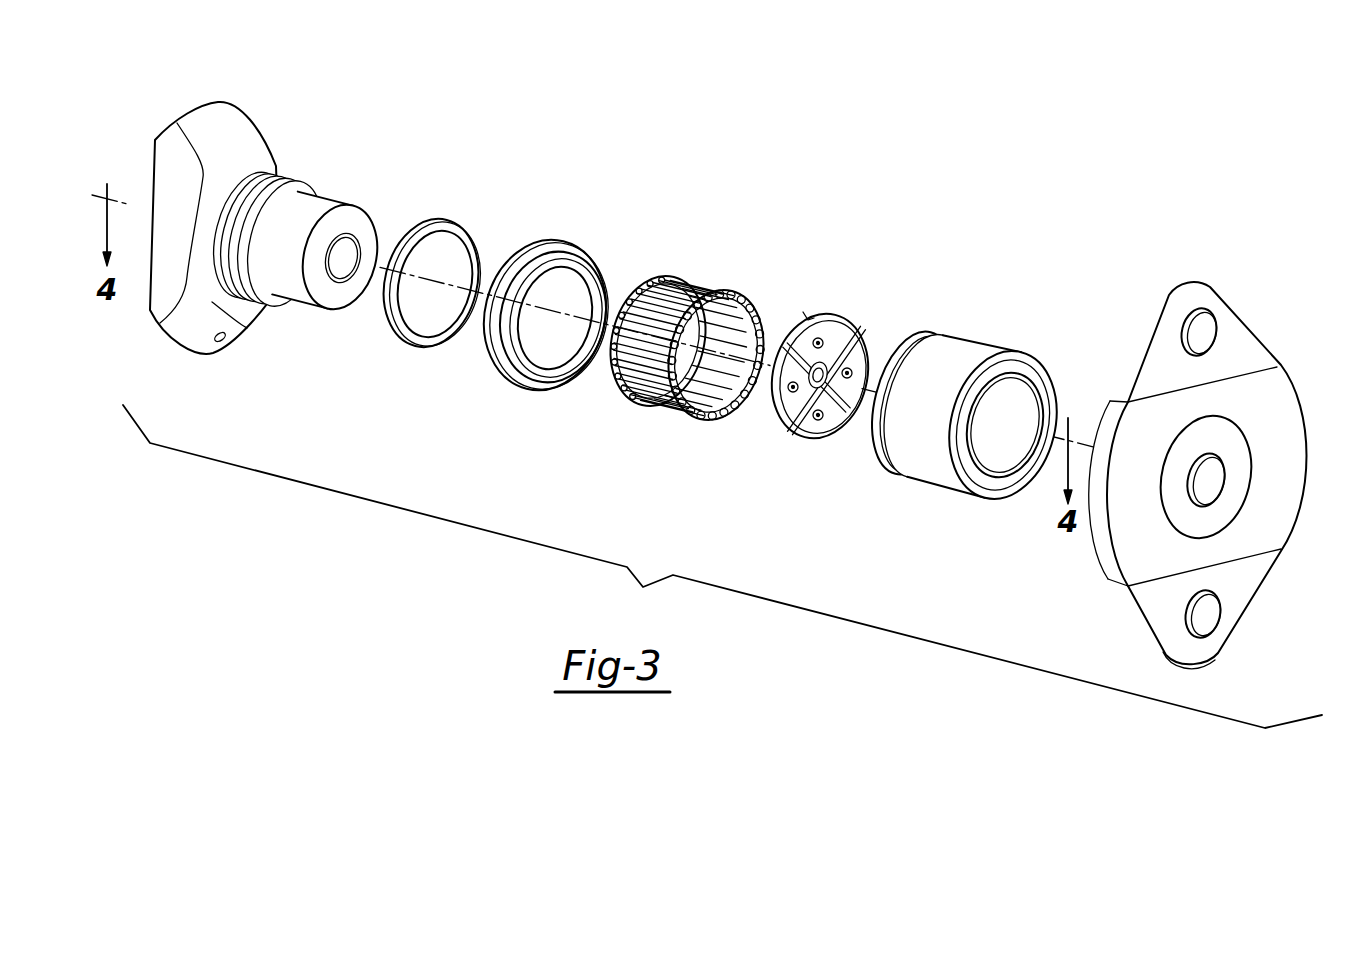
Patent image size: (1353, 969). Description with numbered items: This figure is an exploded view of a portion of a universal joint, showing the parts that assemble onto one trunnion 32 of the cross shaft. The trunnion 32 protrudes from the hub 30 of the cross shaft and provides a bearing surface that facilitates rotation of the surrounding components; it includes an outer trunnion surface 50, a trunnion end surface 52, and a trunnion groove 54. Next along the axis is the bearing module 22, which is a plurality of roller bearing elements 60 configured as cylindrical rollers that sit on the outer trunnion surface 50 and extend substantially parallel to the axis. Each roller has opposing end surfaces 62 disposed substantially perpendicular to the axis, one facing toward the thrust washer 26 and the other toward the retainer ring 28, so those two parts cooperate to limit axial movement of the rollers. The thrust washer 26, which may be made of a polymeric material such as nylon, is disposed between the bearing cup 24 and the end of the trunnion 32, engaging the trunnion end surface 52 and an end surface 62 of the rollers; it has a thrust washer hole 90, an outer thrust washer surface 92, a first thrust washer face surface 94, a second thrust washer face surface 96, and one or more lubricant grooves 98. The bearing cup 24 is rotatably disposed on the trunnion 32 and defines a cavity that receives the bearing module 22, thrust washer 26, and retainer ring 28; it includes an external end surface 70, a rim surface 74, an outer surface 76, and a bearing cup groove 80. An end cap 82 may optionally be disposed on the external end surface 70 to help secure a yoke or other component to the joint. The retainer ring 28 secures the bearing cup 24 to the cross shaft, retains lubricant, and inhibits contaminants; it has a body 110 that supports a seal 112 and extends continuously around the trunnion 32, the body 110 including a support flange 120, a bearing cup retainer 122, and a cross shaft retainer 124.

The bearing module 22 is at (676, 339).
The bearing cup 24 is at (958, 407).
The thrust washer 26 is at (821, 365).
The retainer ring 28 is at (509, 289).
The hub 30 is at (288, 234).
The trunnion 32 is at (300, 188).
The outer trunnion surface 50 is at (349, 268).
The trunnion end surface 52 is at (366, 225).
The trunnion groove 54 is at (275, 299).
The roller bearing elements 60 is at (673, 410).
The end surfaces 62 is at (617, 389).
The external end surface 70 is at (1020, 480).
The rim surface 74 is at (884, 457).
The outer surface 76 is at (943, 494).
The bearing cup groove 80 is at (918, 338).
The end cap 82 is at (1192, 287).
The thrust washer hole 90 is at (839, 417).
The outer thrust washer surface 92 is at (779, 430).
The first thrust washer face surface 94 is at (849, 353).
The second thrust washer face surface 96 is at (798, 338).
The lubricant grooves 98 is at (808, 318).
The body 110 is at (535, 325).
The seal 112 is at (447, 228).
The support flange 120 is at (520, 310).
The bearing cup retainer 122 is at (566, 246).
The cross shaft retainer 124 is at (582, 301).